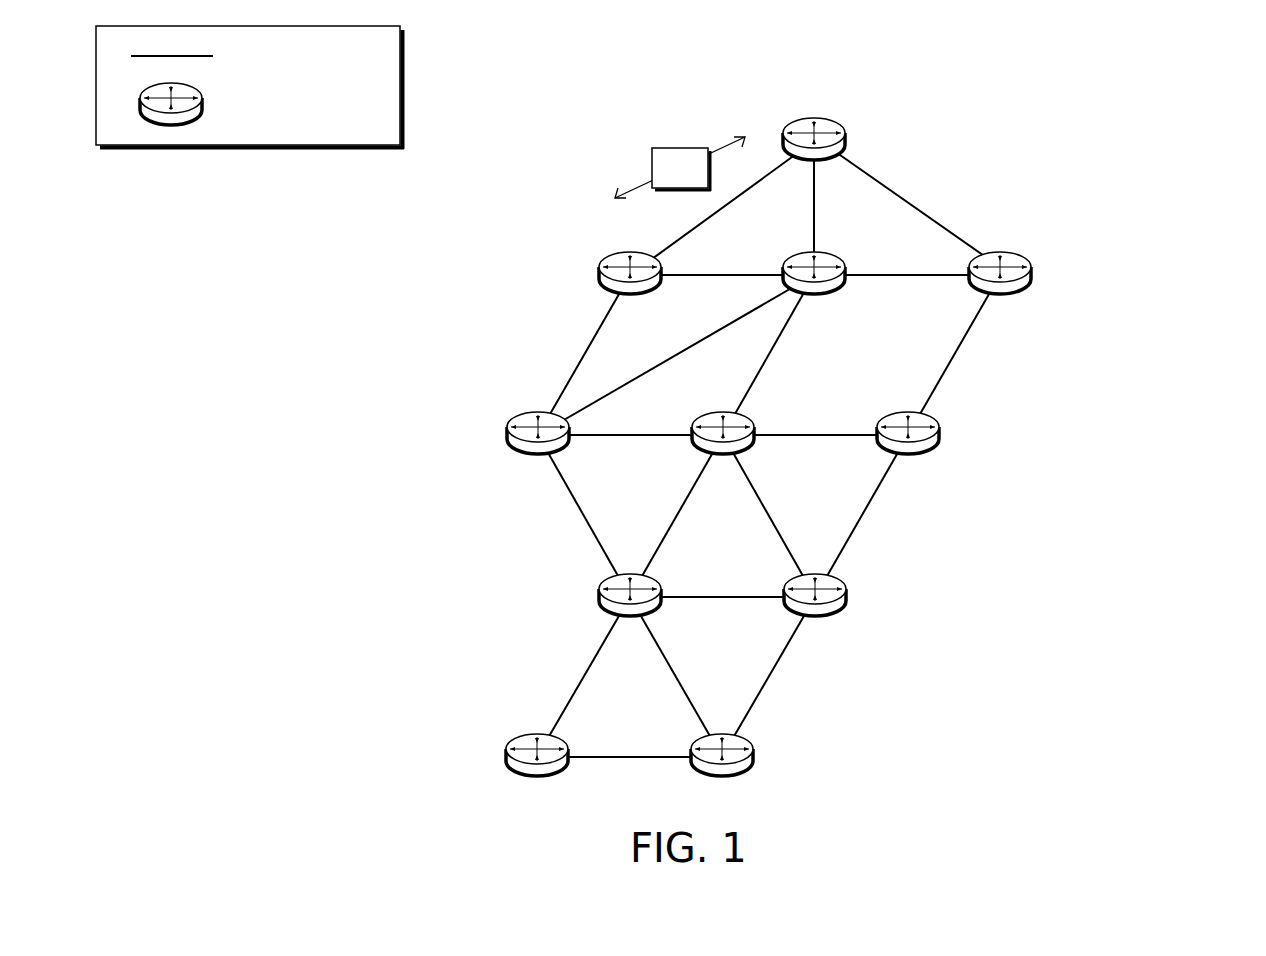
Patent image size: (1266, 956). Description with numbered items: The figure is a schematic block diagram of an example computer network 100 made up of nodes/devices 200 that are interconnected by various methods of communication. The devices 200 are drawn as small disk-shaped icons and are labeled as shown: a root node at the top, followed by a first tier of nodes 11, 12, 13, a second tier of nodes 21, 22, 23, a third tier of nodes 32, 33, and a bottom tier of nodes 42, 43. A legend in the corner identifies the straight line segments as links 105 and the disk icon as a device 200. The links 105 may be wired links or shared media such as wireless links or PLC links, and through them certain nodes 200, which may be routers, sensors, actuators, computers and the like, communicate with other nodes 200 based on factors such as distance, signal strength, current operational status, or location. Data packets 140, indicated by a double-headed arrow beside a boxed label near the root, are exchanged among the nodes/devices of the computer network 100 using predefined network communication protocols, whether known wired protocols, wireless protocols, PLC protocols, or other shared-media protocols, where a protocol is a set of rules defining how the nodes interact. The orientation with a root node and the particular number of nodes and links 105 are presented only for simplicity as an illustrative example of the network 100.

The computer network 100 is at (1178, 85).
The links 105 is at (548, 391).
The data packets 140 is at (665, 180).
The nodes/devices 200 is at (254, 104).
The node 11 is at (630, 292).
The node 12 is at (814, 292).
The node 13 is at (1000, 292).
The node 21 is at (538, 452).
The node 22 is at (723, 452).
The node 23 is at (908, 452).
The node 32 is at (630, 613).
The node 33 is at (815, 613).
The node 42 is at (537, 773).
The node 43 is at (722, 773).